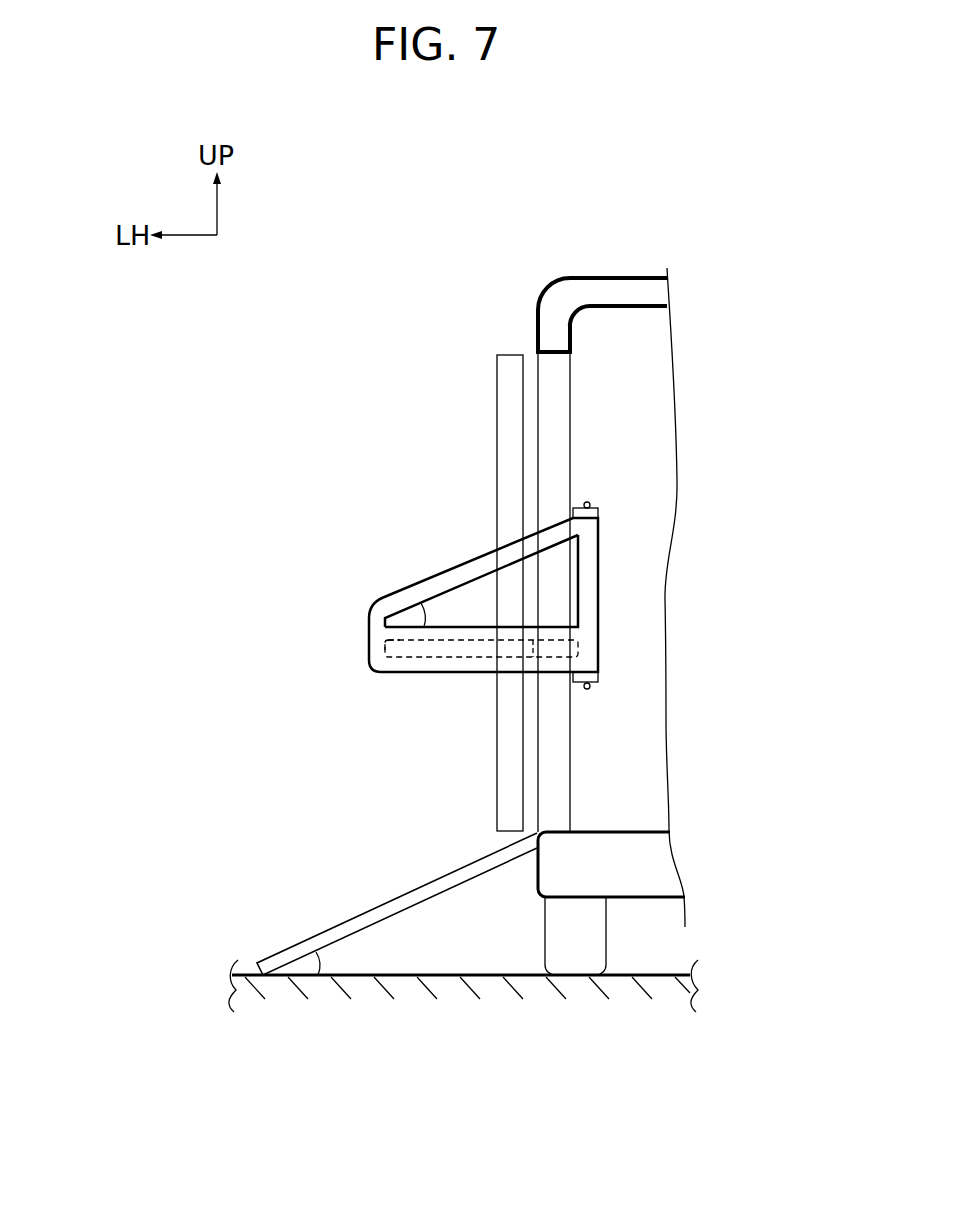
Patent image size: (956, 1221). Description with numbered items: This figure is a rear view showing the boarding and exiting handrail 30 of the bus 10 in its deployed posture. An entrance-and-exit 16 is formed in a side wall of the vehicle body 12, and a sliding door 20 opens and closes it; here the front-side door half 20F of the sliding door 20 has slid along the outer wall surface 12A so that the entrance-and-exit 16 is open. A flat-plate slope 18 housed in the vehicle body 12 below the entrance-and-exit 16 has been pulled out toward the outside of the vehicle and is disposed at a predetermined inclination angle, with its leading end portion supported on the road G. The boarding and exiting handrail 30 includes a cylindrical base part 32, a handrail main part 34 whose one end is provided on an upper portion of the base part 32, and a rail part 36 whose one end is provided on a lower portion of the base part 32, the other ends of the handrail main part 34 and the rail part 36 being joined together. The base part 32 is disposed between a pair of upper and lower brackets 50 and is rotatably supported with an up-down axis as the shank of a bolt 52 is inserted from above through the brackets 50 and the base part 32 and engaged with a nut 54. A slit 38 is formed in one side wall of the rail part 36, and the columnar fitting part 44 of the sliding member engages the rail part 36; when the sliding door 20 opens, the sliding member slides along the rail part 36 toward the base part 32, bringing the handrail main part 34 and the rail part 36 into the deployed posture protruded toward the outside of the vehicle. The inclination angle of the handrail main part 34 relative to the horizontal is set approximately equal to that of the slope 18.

The bus 10 is at (607, 560).
The vehicle body 12 is at (622, 272).
The outer wall surface 12A is at (536, 320).
The entrance-and-exit 16 is at (557, 787).
The slope 18 is at (358, 915).
The sliding door 20 is at (450, 554).
The front-side door half 20F is at (498, 355).
The boarding and exiting handrail 30 is at (526, 586).
The base part 32 is at (585, 580).
The handrail main part 34 is at (483, 556).
The rail part 36 is at (440, 661).
The slit 38 is at (397, 653).
The fitting part 44 is at (533, 648).
The brackets 50 is at (602, 513).
The bolt 52 is at (589, 504).
The nut 54 is at (590, 689).
The road G is at (250, 975).